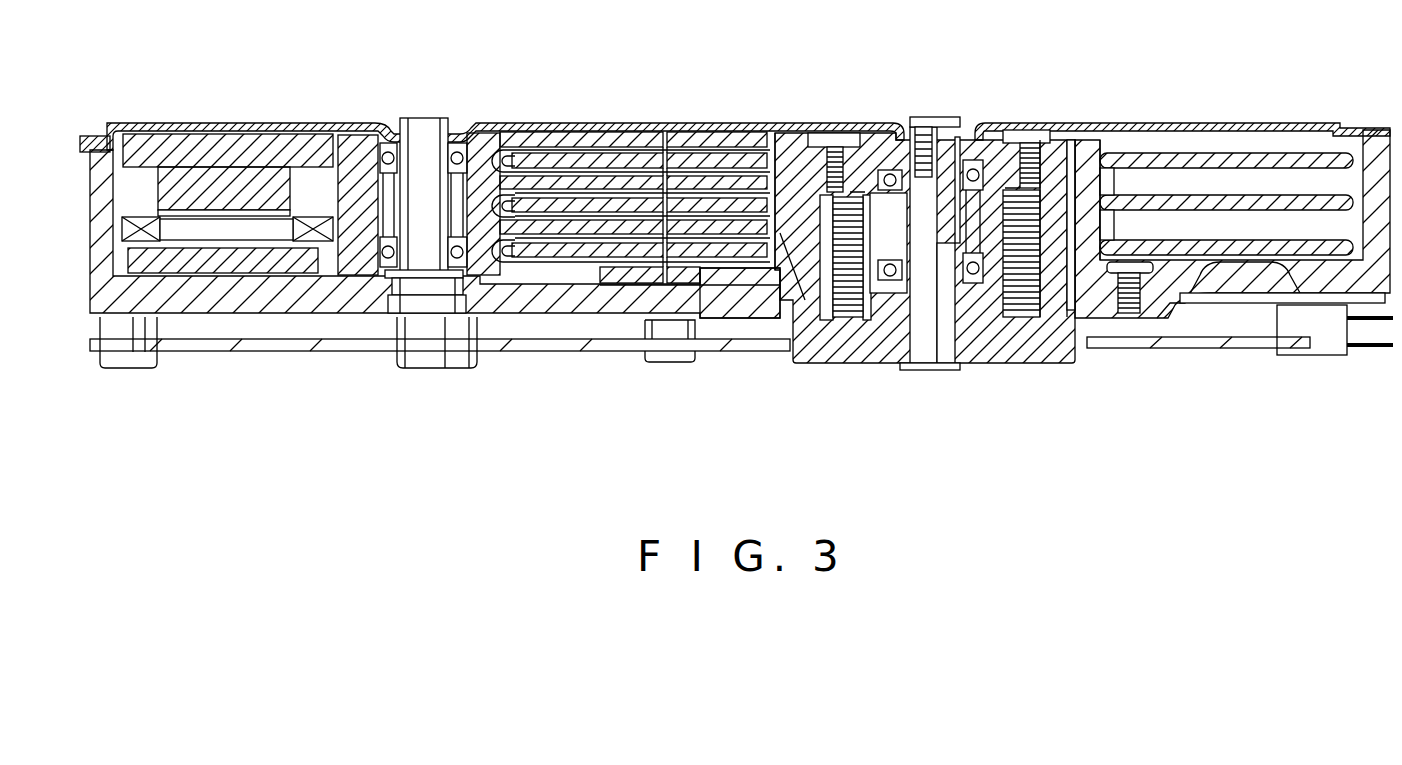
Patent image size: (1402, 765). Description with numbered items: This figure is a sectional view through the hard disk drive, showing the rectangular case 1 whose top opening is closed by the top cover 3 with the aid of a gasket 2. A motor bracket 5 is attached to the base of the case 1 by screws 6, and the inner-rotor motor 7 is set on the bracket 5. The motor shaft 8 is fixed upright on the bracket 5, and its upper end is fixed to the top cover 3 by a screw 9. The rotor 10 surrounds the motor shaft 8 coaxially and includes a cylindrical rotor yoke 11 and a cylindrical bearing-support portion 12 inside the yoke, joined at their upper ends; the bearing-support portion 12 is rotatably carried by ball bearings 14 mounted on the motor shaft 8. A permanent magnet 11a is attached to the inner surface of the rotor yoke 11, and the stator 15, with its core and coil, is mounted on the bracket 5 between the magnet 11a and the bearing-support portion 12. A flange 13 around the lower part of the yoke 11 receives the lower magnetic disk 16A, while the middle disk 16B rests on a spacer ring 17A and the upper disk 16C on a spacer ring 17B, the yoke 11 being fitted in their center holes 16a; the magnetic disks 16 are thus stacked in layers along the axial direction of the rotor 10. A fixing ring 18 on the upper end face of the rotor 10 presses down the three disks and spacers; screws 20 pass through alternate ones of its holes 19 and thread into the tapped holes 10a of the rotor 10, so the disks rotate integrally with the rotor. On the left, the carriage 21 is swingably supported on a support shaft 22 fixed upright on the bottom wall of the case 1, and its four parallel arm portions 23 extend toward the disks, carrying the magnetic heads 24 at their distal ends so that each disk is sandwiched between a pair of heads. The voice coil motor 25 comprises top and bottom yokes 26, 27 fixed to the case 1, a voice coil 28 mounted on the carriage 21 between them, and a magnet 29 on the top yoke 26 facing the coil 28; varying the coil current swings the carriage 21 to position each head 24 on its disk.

The case 1 is at (113, 240).
The gasket 2 is at (87, 152).
The top cover 3 is at (140, 123).
The motor bracket 5 is at (985, 348).
The screws 6 is at (1147, 307).
The inner-rotor motor 7 is at (902, 255).
The motor shaft 8 is at (926, 350).
The screw 9 is at (937, 117).
The rotor 10 is at (790, 178).
The tapped holes 10a is at (862, 150).
The rotor yoke 11 is at (1108, 185).
The permanent magnet 11a is at (1038, 312).
The bearing-support portion 12 is at (975, 150).
The flange 13 is at (1060, 273).
The ball bearings 14 is at (900, 150).
The stator 15 is at (778, 305).
The head housing 16 is at (1100, 280).
The circular hole 16a is at (1104, 200).
The lower magnetic disk 16A is at (1305, 255).
The middle magnetic disk 16B is at (1315, 195).
The upper magnetic disk 16C is at (1278, 153).
The spacer ring 17A is at (787, 233).
The spacer ring 17B is at (752, 150).
The fixing ring 18 is at (1075, 150).
The holes 19 is at (835, 158).
The screws 20 is at (847, 146).
The carriage 21 is at (488, 143).
The support shaft 22 is at (412, 253).
The arm portions 23 is at (540, 150).
The magnetic heads 24 is at (745, 125).
The voice coil motor 25 is at (232, 180).
The top yoke 26 is at (310, 140).
The bottom yoke 27 is at (235, 262).
The voice coil 28 is at (140, 237).
The magnet 29 is at (185, 178).